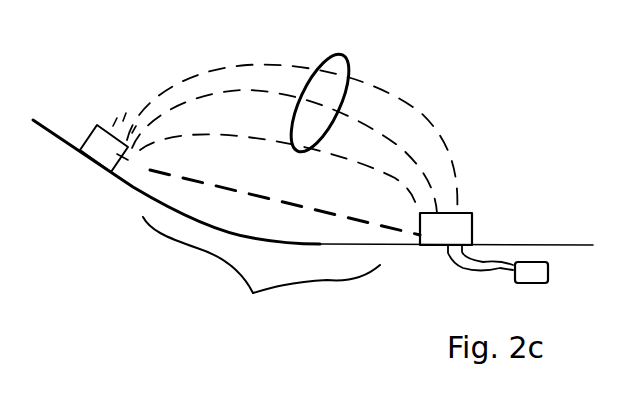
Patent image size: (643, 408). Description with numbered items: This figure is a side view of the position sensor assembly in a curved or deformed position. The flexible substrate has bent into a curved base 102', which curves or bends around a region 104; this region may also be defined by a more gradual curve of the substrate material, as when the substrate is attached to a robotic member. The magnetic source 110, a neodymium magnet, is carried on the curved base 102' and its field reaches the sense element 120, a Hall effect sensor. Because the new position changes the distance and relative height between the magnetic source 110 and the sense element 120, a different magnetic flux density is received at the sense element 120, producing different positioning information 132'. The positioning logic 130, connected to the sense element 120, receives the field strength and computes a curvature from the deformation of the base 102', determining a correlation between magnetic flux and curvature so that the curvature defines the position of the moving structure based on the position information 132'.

The curved base 102' is at (313, 183).
The magnetic source 110 is at (98, 126).
The positioning information 132' is at (351, 100).
The sense element 120 is at (472, 225).
The positioning logic 130 is at (548, 272).
The region 104 is at (253, 293).